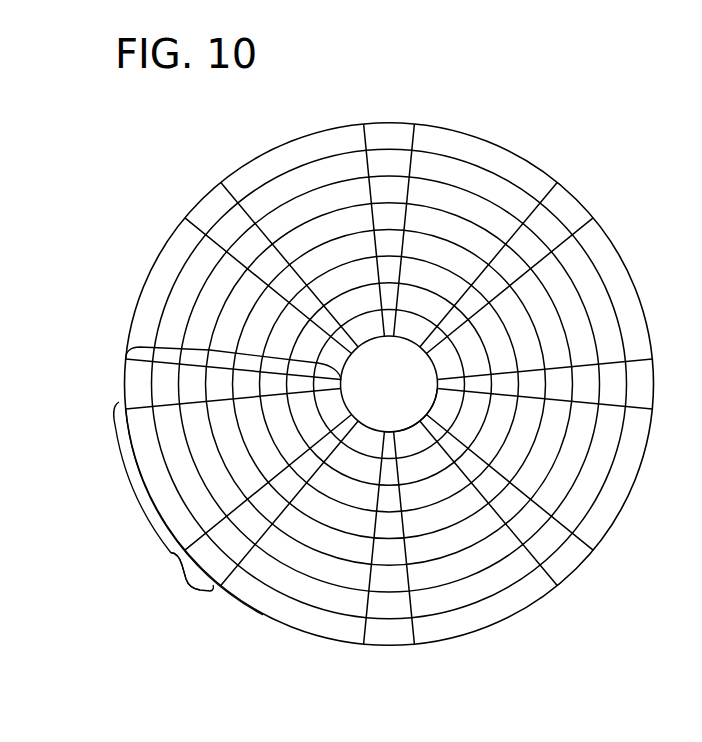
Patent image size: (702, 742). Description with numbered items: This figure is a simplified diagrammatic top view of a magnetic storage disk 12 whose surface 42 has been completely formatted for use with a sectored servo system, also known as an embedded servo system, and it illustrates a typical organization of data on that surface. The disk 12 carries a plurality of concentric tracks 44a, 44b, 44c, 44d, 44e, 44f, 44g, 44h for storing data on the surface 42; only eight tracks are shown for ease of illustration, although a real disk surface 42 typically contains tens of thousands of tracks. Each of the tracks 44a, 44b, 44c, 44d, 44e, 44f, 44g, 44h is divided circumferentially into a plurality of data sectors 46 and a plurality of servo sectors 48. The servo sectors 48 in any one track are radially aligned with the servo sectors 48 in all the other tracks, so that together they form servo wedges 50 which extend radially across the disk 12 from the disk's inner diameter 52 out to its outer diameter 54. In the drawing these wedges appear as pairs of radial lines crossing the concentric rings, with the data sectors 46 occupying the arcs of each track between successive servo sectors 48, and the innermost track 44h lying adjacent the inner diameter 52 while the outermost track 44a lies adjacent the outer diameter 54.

The disk 12 is at (263, 151).
The surface 42 is at (215, 282).
The concentric track 44a is at (450, 138).
The concentric track 44b is at (488, 182).
The concentric track 44c is at (487, 213).
The concentric track 44d is at (485, 240).
The concentric track 44e is at (473, 503).
The concentric track 44f is at (448, 482).
The concentric track 44g is at (425, 462).
The concentric track 44h is at (407, 442).
The data sector 46 is at (129, 486).
The servo sector 48 is at (186, 582).
The servo wedge 50 is at (222, 348).
The inner diameter 52 is at (348, 406).
The outer diameter 54 is at (263, 615).